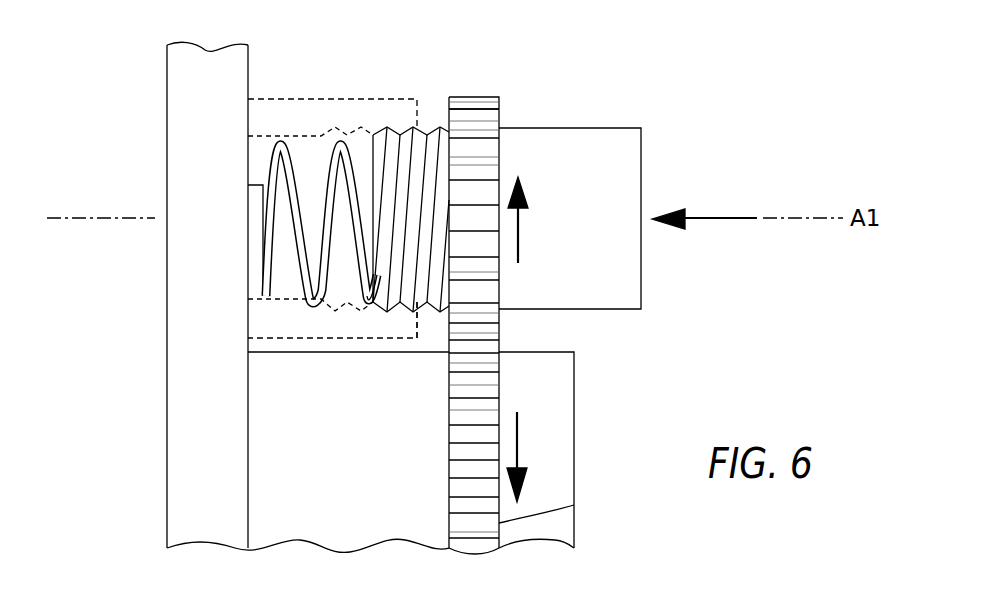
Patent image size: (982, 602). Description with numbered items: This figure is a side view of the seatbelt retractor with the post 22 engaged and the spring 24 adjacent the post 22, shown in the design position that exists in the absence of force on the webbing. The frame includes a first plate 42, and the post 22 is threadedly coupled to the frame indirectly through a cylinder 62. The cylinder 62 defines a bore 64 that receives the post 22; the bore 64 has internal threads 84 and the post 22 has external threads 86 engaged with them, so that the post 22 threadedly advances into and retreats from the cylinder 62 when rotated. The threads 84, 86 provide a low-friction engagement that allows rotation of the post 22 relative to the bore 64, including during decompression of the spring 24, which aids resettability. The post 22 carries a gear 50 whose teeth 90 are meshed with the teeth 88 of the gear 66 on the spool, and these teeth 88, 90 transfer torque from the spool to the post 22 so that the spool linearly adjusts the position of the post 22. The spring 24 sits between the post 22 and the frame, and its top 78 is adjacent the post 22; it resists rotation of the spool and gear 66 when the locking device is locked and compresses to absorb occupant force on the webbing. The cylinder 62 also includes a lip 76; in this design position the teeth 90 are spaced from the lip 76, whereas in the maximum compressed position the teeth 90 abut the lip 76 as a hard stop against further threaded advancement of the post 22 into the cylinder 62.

The first plate 42 is at (167, 85).
The spring 24 is at (270, 168).
The cylinder 62 is at (332, 98).
The bore 64 is at (302, 150).
The internal threads 84 is at (362, 127).
The external threads 86 is at (441, 128).
The gear 50 is at (470, 97).
The teeth 90 is at (488, 115).
The post 22 is at (642, 155).
The gear 66 is at (499, 388).
The teeth 88 is at (499, 523).
The top 78 is at (358, 300).
The lip 76 is at (420, 325).